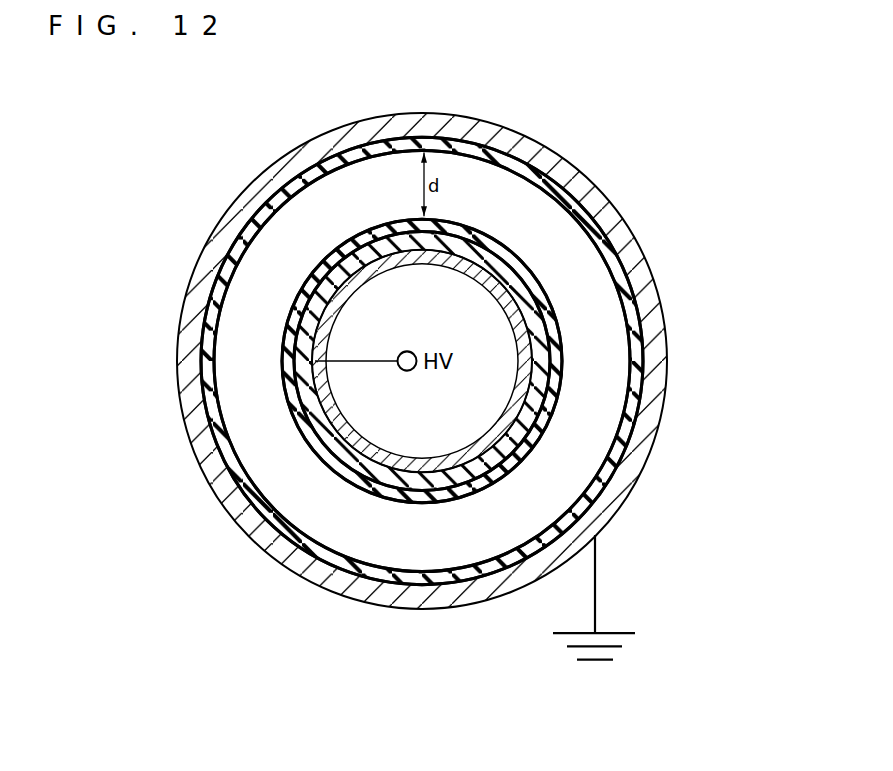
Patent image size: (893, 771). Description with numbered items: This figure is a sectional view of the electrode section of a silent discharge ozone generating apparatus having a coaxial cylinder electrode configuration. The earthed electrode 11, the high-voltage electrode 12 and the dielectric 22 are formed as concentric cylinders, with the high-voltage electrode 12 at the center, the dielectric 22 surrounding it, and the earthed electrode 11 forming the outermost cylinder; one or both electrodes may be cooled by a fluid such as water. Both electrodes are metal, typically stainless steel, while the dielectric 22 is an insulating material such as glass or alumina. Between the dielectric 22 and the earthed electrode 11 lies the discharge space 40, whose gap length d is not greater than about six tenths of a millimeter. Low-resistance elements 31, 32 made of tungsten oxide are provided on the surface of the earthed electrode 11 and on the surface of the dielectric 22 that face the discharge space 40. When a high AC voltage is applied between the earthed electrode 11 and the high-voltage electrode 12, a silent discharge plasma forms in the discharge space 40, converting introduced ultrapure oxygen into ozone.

The earthed electrode 11 is at (422, 327).
The low-resistance element 31 is at (425, 360).
The discharge space 40 is at (475, 361).
The dielectric 22 is at (340, 360).
The low-resistance element 32 is at (334, 360).
The high-voltage electrode 12 is at (381, 425).